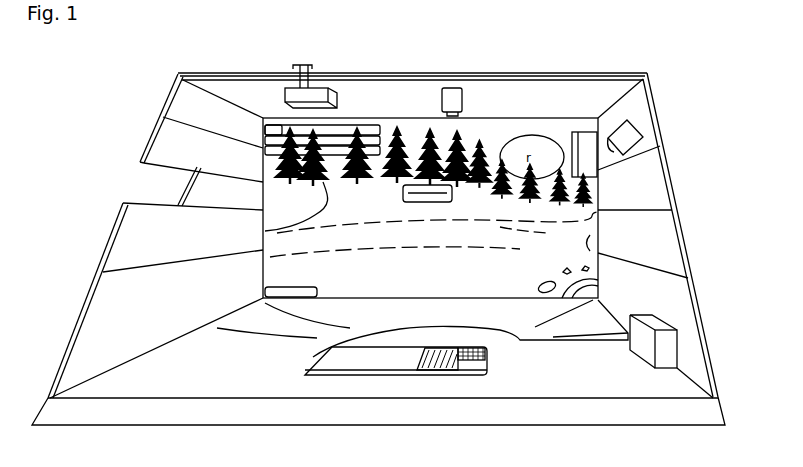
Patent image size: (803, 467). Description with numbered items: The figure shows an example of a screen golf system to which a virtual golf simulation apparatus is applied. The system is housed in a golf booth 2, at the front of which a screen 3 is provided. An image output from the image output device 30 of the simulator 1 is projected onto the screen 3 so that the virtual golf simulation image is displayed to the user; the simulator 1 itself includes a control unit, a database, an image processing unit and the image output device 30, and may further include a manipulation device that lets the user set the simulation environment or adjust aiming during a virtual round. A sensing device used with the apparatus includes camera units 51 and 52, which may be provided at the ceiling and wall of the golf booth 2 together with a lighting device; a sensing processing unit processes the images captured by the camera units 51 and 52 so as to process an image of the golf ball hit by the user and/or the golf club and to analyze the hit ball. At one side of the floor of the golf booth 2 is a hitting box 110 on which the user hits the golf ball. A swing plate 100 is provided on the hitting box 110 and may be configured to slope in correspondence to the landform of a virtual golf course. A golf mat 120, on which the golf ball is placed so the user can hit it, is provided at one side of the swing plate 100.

The simulator 1 is at (660, 323).
The golf booth 2 is at (147, 127).
The screen 3 is at (603, 193).
The image output device 30 is at (322, 93).
The camera unit 51 is at (630, 130).
The camera unit 52 is at (452, 92).
The swing plate 100 is at (439, 378).
The hitting box 110 is at (340, 363).
The golf mat 120 is at (491, 360).